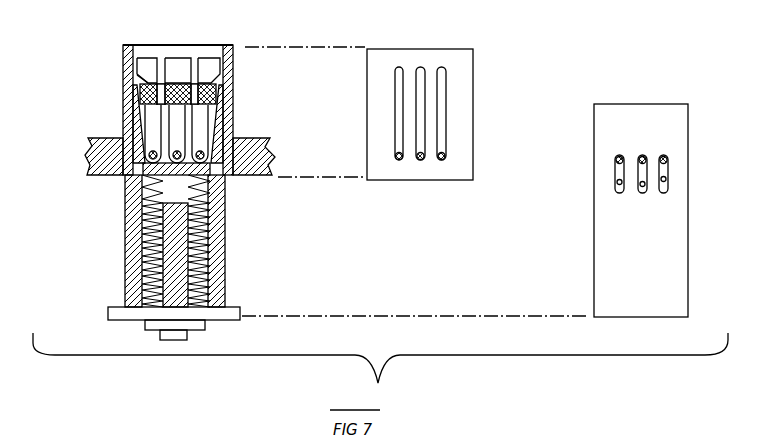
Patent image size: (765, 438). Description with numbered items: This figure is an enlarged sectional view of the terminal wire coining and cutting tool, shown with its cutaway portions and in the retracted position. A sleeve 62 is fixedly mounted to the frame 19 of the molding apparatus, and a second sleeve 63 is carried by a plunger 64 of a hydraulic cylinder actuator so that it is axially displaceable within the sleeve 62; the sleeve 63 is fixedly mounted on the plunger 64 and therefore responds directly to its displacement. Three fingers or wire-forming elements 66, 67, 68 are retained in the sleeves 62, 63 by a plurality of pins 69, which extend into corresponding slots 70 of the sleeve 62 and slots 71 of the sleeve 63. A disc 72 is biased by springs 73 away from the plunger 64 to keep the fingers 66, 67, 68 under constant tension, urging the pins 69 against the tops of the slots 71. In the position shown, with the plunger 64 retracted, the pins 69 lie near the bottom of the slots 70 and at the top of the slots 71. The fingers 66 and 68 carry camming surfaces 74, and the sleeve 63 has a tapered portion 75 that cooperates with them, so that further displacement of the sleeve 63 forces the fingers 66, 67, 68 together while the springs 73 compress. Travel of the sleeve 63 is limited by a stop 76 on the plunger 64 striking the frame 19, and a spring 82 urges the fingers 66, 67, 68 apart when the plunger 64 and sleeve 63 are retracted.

The frame 19 is at (92, 152).
The sleeve 62 is at (230, 72).
The second sleeve 63 is at (218, 272).
The plunger 64 is at (187, 336).
The finger 66 is at (145, 60).
The finger 67 is at (176, 60).
The finger 68 is at (208, 63).
The pins 69 is at (140, 172).
The slots 70 is at (398, 67).
The slots 71 is at (617, 182).
The disc 72 is at (205, 198).
The springs 73 is at (148, 220).
The camming surfaces 74 is at (142, 100).
The tapered portion 75 is at (140, 113).
The stop 76 is at (241, 316).
The spring 82 is at (160, 87).